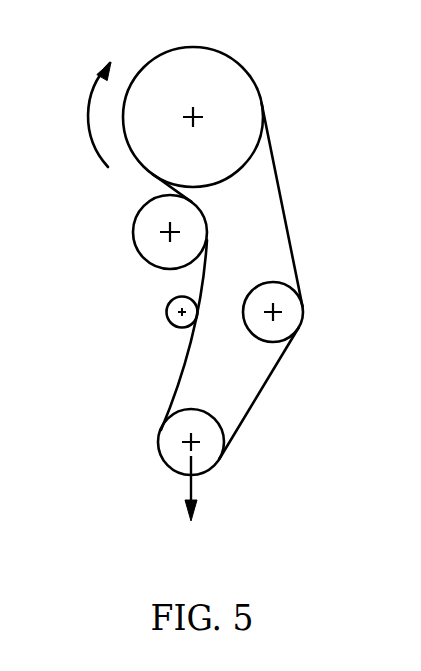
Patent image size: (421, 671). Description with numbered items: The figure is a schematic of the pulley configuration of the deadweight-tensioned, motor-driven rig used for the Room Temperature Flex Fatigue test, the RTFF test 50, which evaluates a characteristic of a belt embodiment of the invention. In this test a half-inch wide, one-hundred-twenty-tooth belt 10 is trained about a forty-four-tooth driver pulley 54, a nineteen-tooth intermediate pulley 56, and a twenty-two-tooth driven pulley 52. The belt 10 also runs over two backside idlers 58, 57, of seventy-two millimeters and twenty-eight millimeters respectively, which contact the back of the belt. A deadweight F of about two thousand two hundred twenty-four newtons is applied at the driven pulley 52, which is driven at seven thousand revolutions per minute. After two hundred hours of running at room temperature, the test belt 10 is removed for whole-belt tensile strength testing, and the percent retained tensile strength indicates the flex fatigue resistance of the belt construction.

The belt 10 is at (287, 220).
The RTFF test 50 is at (277, 92).
The driven pulley 52 is at (167, 438).
The driver pulley 54 is at (237, 138).
The intermediate pulley 56 is at (290, 312).
The backside idler 57 is at (170, 310).
The backside idler 58 is at (147, 232).